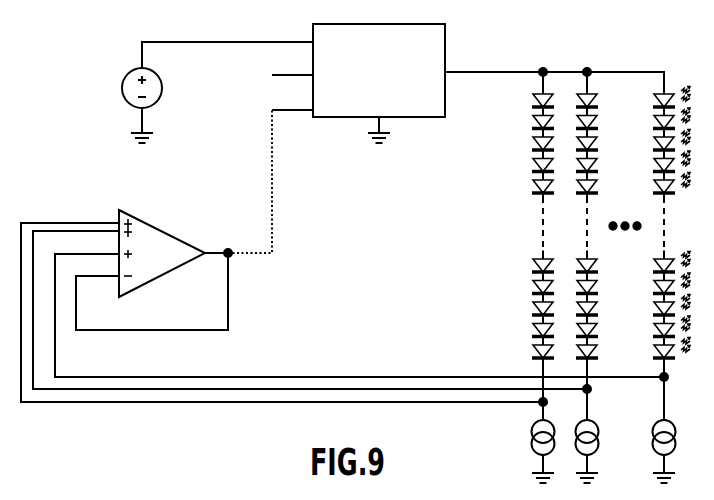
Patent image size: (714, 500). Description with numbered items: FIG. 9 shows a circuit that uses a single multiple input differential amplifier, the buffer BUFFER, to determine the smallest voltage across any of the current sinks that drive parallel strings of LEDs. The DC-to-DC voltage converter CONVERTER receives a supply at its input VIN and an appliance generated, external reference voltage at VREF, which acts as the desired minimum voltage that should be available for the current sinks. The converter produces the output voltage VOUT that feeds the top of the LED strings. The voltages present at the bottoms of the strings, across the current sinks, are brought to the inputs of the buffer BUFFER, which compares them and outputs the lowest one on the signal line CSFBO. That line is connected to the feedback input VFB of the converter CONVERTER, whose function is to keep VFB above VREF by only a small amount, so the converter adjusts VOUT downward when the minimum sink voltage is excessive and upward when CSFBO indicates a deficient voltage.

The input voltage VIN is at (217, 76).
The reference voltage VREF is at (287, 60).
The feedback input VFB is at (270, 164).
The output voltage VOUT is at (554, 62).
The DC-to-DC voltage converter CONVERTER is at (379, 83).
The buffer BUFFER is at (155, 248).
The current sink feedback output signal line CSFBO is at (232, 237).